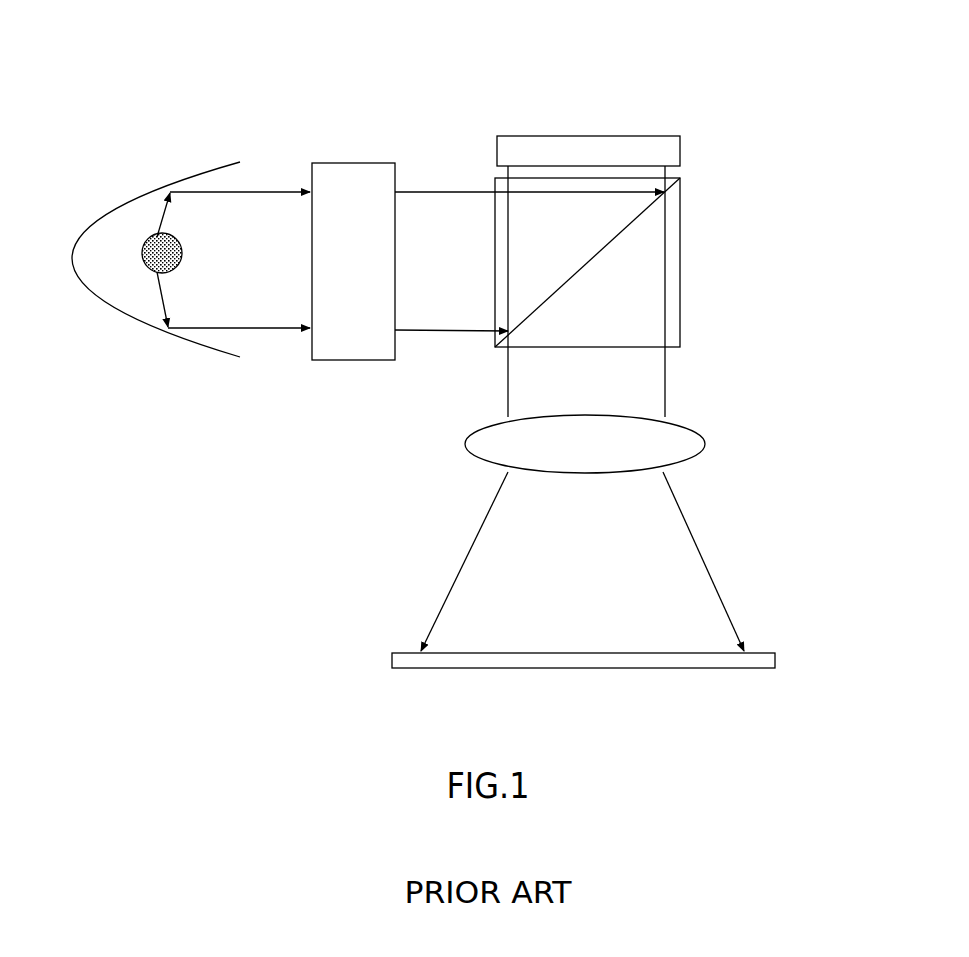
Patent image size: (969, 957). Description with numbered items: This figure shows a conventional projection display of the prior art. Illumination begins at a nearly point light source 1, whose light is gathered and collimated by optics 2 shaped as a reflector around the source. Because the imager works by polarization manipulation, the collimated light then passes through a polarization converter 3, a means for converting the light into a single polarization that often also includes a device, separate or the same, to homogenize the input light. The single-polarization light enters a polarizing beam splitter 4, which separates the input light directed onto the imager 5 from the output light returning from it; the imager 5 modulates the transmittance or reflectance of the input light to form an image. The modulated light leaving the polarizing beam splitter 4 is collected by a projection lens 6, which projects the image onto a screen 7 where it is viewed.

The light source 1 is at (155, 262).
The optics 2 is at (210, 345).
The polarization converter 3 is at (368, 177).
The polarizing beam splitter 4 is at (622, 291).
The imager 5 is at (595, 150).
The projection lens 6 is at (690, 445).
The screen 7 is at (775, 653).